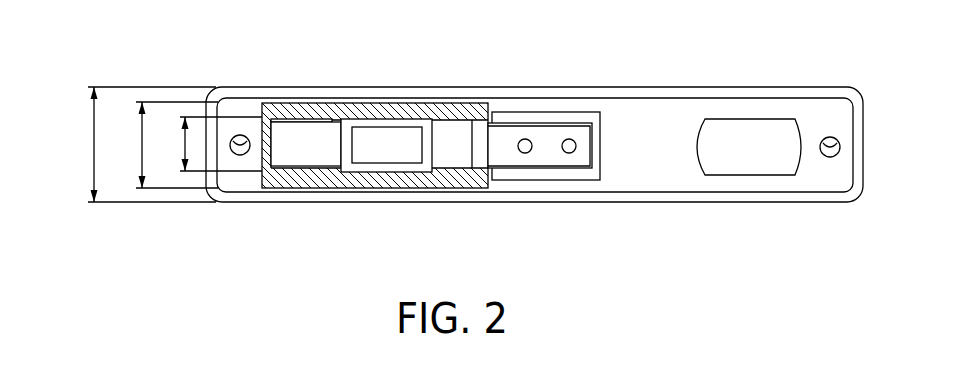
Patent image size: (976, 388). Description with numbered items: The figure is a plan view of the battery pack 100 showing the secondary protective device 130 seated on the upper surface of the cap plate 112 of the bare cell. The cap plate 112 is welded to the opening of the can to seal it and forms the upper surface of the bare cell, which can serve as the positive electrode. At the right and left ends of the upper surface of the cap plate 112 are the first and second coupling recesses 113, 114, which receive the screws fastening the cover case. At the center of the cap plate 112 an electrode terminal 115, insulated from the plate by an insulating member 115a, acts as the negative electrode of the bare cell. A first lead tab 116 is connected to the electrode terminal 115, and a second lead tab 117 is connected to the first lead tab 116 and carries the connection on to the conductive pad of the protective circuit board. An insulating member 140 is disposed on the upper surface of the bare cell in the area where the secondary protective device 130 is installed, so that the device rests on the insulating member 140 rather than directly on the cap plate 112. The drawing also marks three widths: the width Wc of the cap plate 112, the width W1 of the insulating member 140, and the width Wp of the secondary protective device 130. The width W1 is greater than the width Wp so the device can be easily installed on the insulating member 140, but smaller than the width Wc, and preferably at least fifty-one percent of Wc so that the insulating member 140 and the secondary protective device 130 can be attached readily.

The battery pack 100 is at (87, 28).
The cap plate 112 is at (750, 103).
The first coupling recess 113 is at (236, 134).
The second coupling recess 114 is at (832, 137).
The electrode terminal 115 is at (548, 121).
The insulating member 115a is at (599, 111).
The first lead tab 116 is at (507, 132).
The second lead tab 117 is at (300, 119).
The secondary protective device 130 is at (414, 111).
The insulating member 140 is at (340, 97).
The width of the cap plate Wc is at (139, 144).
The width of the insulating member W1 is at (164, 145).
The width of the secondary protective device Wp is at (208, 144).